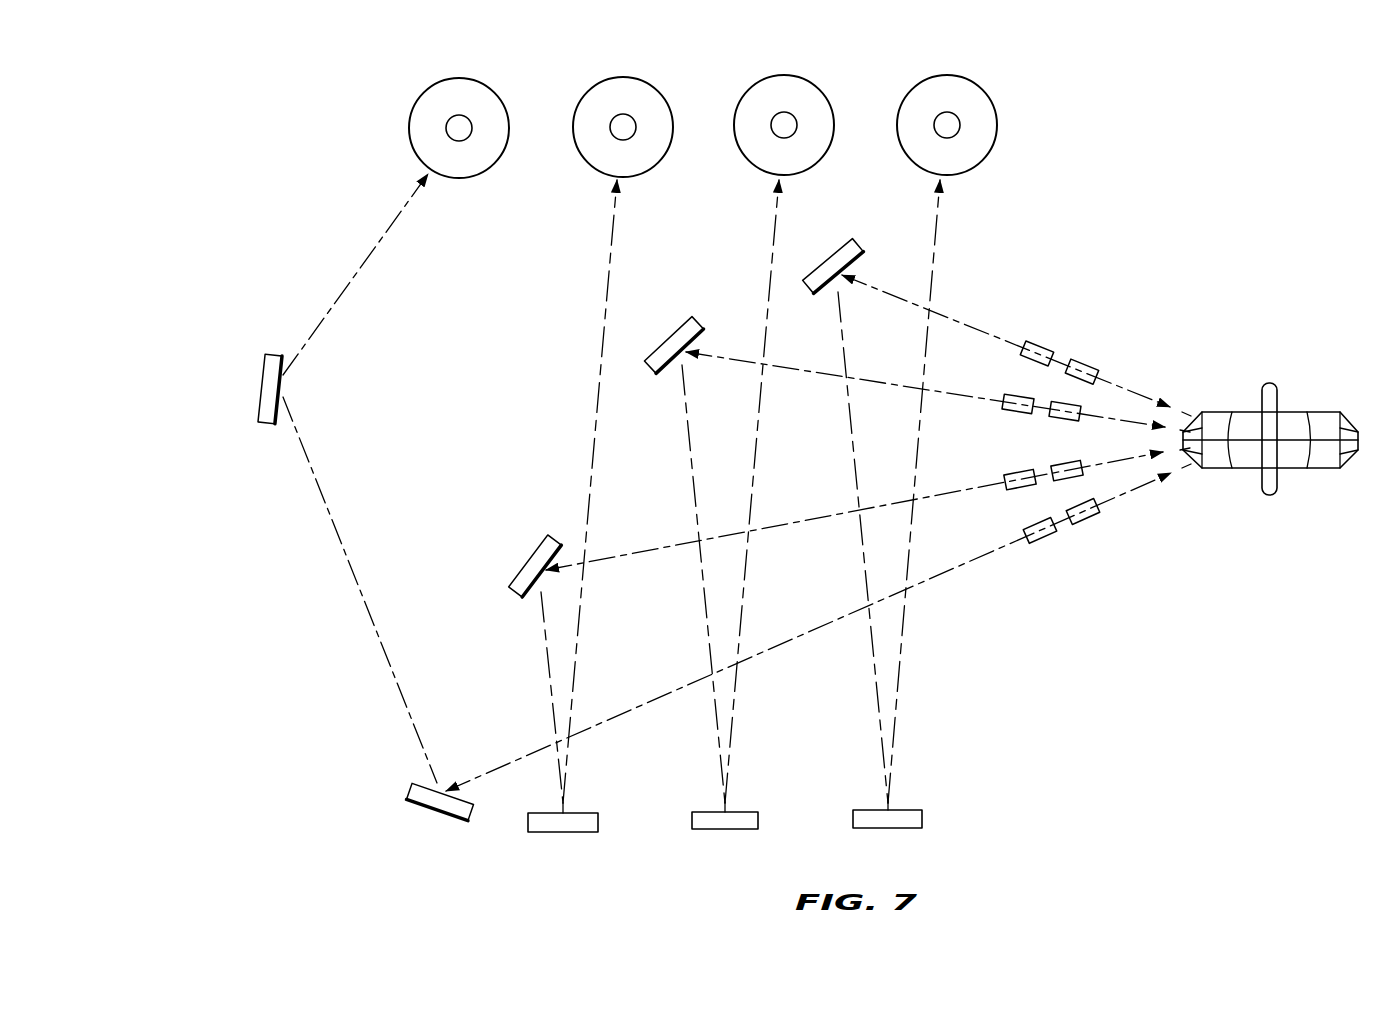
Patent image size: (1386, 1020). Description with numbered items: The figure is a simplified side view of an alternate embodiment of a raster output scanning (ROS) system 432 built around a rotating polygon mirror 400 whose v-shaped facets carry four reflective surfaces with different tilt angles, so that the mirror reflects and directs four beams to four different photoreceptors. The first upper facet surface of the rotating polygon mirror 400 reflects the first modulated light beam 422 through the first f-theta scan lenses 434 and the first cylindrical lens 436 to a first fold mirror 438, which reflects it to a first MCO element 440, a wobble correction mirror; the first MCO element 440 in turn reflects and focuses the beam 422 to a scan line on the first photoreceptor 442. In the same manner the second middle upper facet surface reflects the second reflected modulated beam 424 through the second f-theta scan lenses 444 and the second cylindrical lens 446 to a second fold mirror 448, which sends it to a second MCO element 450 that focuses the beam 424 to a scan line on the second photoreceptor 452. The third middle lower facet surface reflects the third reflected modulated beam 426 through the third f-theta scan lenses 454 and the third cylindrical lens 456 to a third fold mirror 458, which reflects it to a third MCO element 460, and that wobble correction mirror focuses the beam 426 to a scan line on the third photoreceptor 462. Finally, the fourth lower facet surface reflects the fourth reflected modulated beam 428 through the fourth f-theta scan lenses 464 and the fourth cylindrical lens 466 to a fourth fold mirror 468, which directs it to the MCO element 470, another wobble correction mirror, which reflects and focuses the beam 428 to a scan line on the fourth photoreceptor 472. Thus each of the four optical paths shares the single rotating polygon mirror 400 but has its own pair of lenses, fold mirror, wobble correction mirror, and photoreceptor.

The rotating polygon mirror 400 is at (1374, 368).
The raster output scanning (ROS) system 432 is at (1158, 86).
The first modulated light beam 422 is at (1130, 386).
The second reflected modulated beam 424 is at (1126, 420).
The third reflected modulated beam 426 is at (1134, 468).
The fourth reflected modulated beam 428 is at (1132, 494).
The first f-theta scan lenses 434 is at (1085, 362).
The first cylindrical lens 436 is at (1032, 341).
The second f-theta scan lenses 444 is at (1072, 405).
The second cylindrical lens 446 is at (1010, 396).
The third f-theta scan lenses 454 is at (1070, 464).
The third cylindrical lens 456 is at (1014, 473).
The fourth f-theta scan lenses 464 is at (1082, 520).
The fourth cylindrical lens 466 is at (1034, 538).
The first fold mirror 438 is at (848, 250).
The second fold mirror 448 is at (690, 326).
The third fold mirror 458 is at (540, 552).
The fourth fold mirror 468 is at (428, 805).
The MCO element 470 is at (266, 420).
The first MCO element 440 is at (910, 809).
The second MCO element 450 is at (750, 811).
The third MCO element 460 is at (588, 812).
The first photoreceptor 442 is at (908, 104).
The second photoreceptor 452 is at (748, 104).
The third photoreceptor 462 is at (586, 106).
The fourth photoreceptor 472 is at (426, 106).